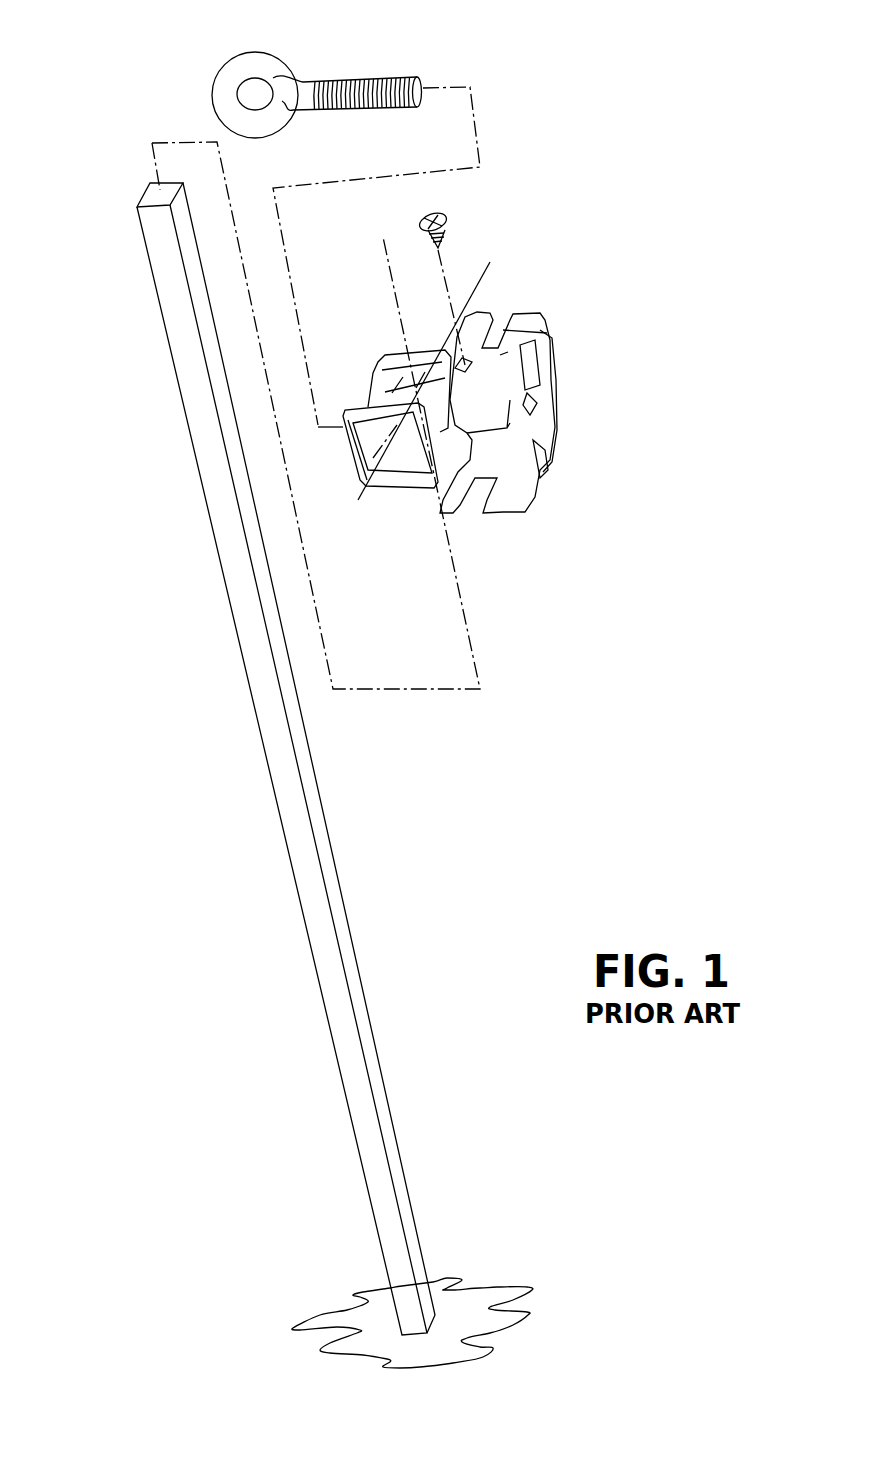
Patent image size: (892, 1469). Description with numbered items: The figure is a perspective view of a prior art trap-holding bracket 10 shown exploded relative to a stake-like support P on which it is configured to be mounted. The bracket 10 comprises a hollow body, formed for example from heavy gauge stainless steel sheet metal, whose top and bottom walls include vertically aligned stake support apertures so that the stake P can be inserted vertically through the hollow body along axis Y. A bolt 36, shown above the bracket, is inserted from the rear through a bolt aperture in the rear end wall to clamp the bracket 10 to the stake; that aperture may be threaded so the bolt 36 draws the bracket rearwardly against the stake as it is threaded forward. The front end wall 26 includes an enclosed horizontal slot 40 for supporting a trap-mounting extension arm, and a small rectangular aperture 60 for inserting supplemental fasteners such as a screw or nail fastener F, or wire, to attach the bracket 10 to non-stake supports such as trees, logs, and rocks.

The bolt 36 is at (303, 80).
The trap-holding bracket 10 is at (462, 399).
The enclosed horizontal slot 40 is at (530, 347).
The small rectangular aperture 60 is at (415, 445).
The front end wall 26 is at (522, 433).
The fastener F is at (447, 230).
The axis Y is at (393, 277).
The stake-like support P is at (325, 862).